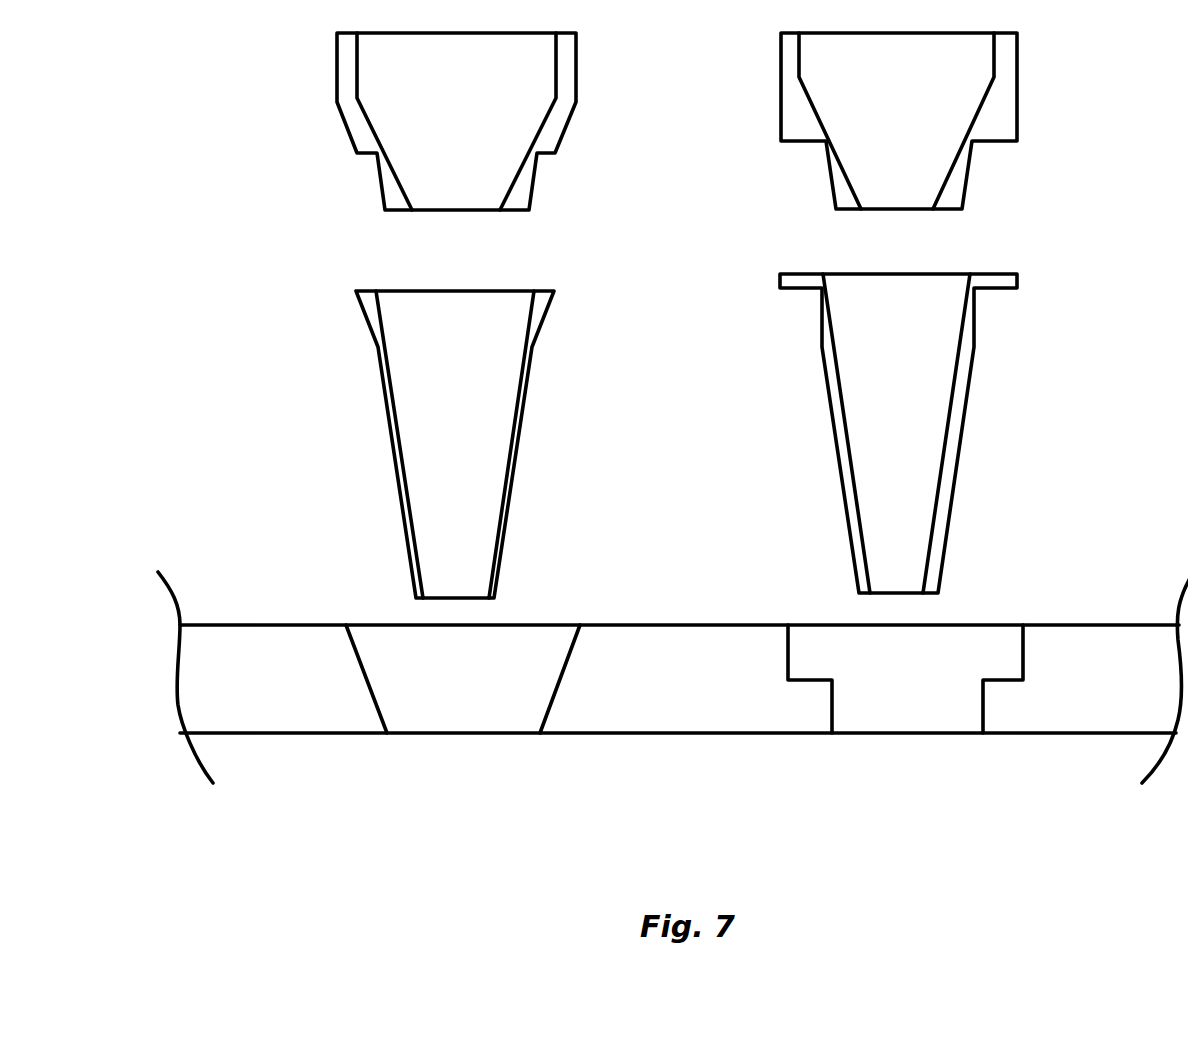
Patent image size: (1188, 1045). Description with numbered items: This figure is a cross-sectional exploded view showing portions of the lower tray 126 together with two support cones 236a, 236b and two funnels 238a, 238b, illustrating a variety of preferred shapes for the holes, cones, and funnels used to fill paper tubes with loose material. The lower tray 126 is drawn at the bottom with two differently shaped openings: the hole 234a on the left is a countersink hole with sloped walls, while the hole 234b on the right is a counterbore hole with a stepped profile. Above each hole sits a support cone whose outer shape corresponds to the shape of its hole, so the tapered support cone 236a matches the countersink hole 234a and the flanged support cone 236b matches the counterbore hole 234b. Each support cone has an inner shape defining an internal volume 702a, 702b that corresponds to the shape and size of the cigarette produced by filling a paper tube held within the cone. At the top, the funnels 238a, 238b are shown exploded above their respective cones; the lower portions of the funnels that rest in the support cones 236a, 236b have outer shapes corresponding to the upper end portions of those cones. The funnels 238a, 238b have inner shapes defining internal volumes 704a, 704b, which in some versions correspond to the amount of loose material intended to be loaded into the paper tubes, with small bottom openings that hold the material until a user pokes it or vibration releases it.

The lower tray 126 is at (663, 677).
The countersink hole 234a is at (560, 688).
The counterbore hole 234b is at (985, 713).
The support cone 236a is at (520, 422).
The support cone 236b is at (967, 412).
The funnel 238a is at (565, 122).
The funnel 238b is at (1013, 105).
The internal volume 702a is at (422, 448).
The internal volume 702b is at (872, 434).
The internal volume 704a is at (396, 90).
The internal volume 704b is at (842, 74).